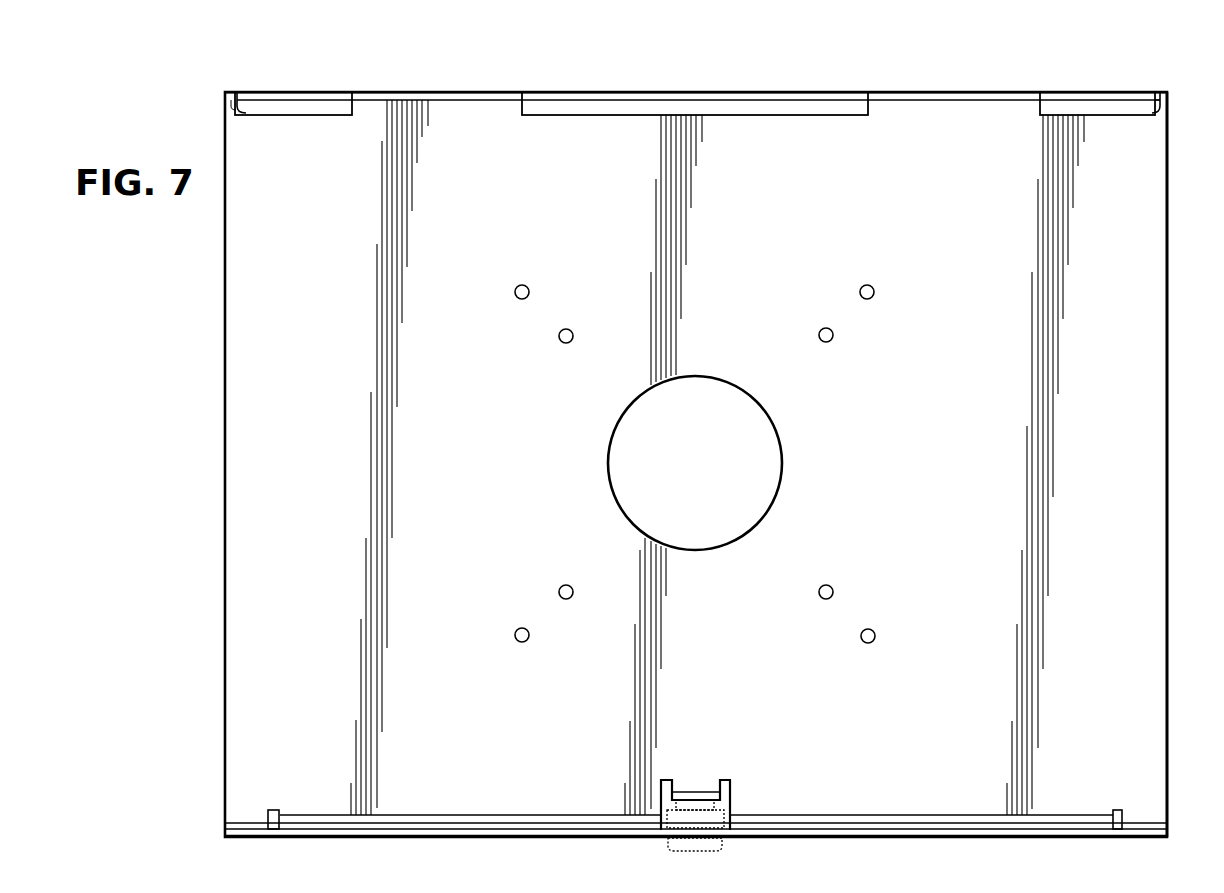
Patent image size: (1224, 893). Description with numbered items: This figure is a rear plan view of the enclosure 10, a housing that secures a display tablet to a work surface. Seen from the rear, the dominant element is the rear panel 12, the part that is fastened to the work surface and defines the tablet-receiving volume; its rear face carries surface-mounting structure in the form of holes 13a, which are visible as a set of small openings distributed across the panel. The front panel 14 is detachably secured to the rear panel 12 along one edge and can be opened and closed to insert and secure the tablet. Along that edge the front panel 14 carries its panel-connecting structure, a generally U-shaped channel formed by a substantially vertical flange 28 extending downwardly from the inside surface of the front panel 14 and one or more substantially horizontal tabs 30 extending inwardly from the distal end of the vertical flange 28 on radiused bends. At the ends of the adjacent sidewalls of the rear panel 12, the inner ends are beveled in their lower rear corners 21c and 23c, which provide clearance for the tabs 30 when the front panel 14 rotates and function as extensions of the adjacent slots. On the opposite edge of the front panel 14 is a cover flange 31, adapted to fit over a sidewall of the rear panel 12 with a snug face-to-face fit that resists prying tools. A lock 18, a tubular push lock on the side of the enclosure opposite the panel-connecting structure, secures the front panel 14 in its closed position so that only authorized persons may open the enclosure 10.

The enclosure 10 is at (976, 73).
The rear panel 12 is at (1148, 323).
The holes 13a is at (559, 338).
The front panel 14 is at (1012, 837).
The lock 18 is at (692, 851).
The beveled corner of sidewall 21 21c is at (232, 103).
The beveled corner of sidewall 23 23c is at (1162, 100).
The vertical flange 28 is at (440, 92).
The horizontal tabs 30 is at (285, 102).
The cover flange 31 is at (1053, 830).